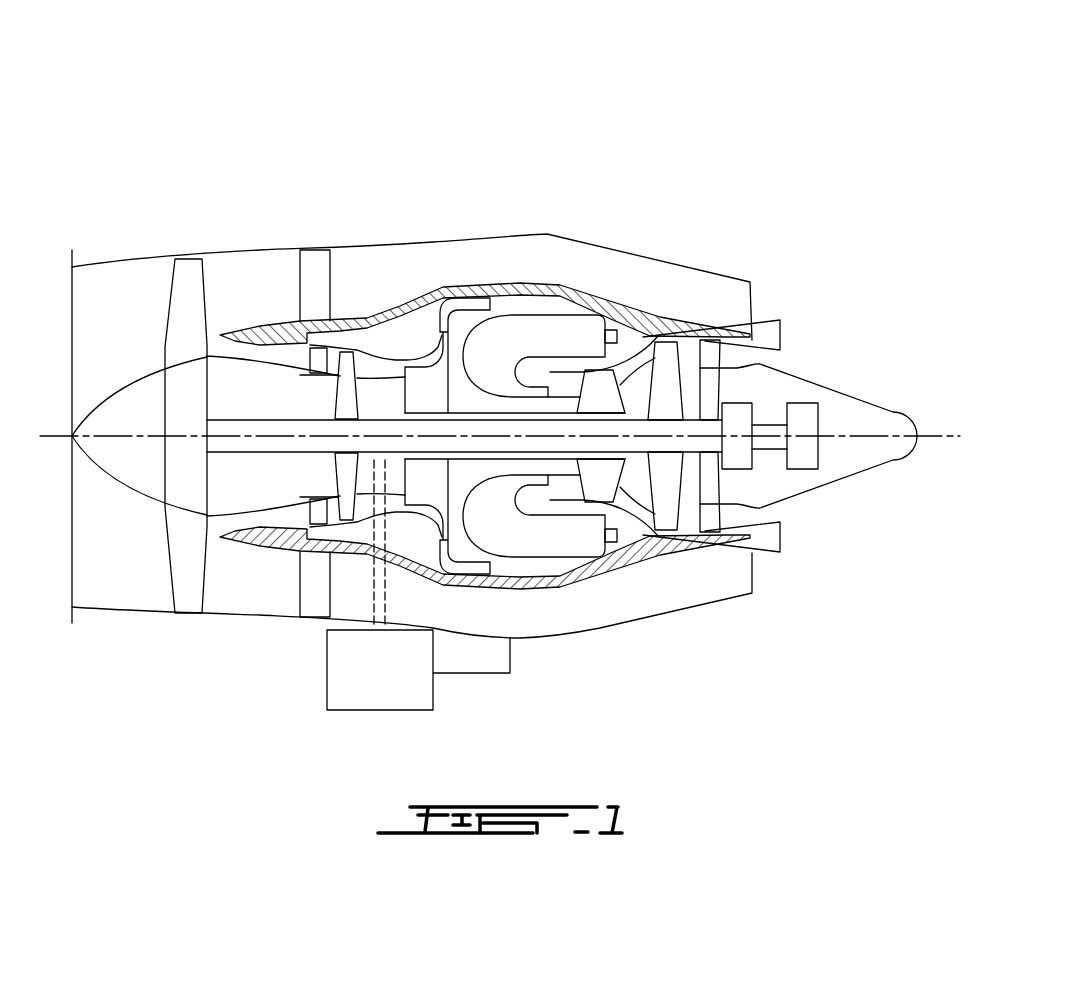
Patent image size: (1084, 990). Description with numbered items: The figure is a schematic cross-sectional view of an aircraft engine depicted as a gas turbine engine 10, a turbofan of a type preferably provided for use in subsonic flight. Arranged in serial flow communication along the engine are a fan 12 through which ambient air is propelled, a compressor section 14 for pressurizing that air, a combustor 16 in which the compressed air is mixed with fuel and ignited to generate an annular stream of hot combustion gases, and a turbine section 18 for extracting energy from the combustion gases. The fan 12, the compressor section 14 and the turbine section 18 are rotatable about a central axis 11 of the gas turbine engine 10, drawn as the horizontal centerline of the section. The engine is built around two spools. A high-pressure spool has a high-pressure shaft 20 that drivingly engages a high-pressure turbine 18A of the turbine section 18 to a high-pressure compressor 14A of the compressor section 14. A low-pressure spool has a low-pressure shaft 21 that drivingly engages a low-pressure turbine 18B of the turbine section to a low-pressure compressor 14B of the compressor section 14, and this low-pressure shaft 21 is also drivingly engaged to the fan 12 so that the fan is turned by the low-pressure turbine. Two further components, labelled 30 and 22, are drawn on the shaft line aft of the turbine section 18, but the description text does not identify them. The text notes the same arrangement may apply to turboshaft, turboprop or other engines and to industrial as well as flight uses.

The gas turbine engine 10 is at (676, 146).
The central axis 11 is at (942, 434).
The fan 12 is at (183, 552).
The compressor section 14 is at (373, 360).
The high-pressure compressor 14A is at (427, 495).
The low-pressure compressor 14B is at (345, 480).
The combustor 16 is at (538, 330).
The turbine section 18 is at (633, 484).
The high-pressure turbine 18A is at (600, 390).
The low-pressure turbine 18B is at (665, 368).
The high-pressure shaft 20 is at (478, 457).
The low-pressure shaft 21 is at (258, 418).
The electric machine 22 is at (802, 403).
The gearbox 30 is at (733, 403).